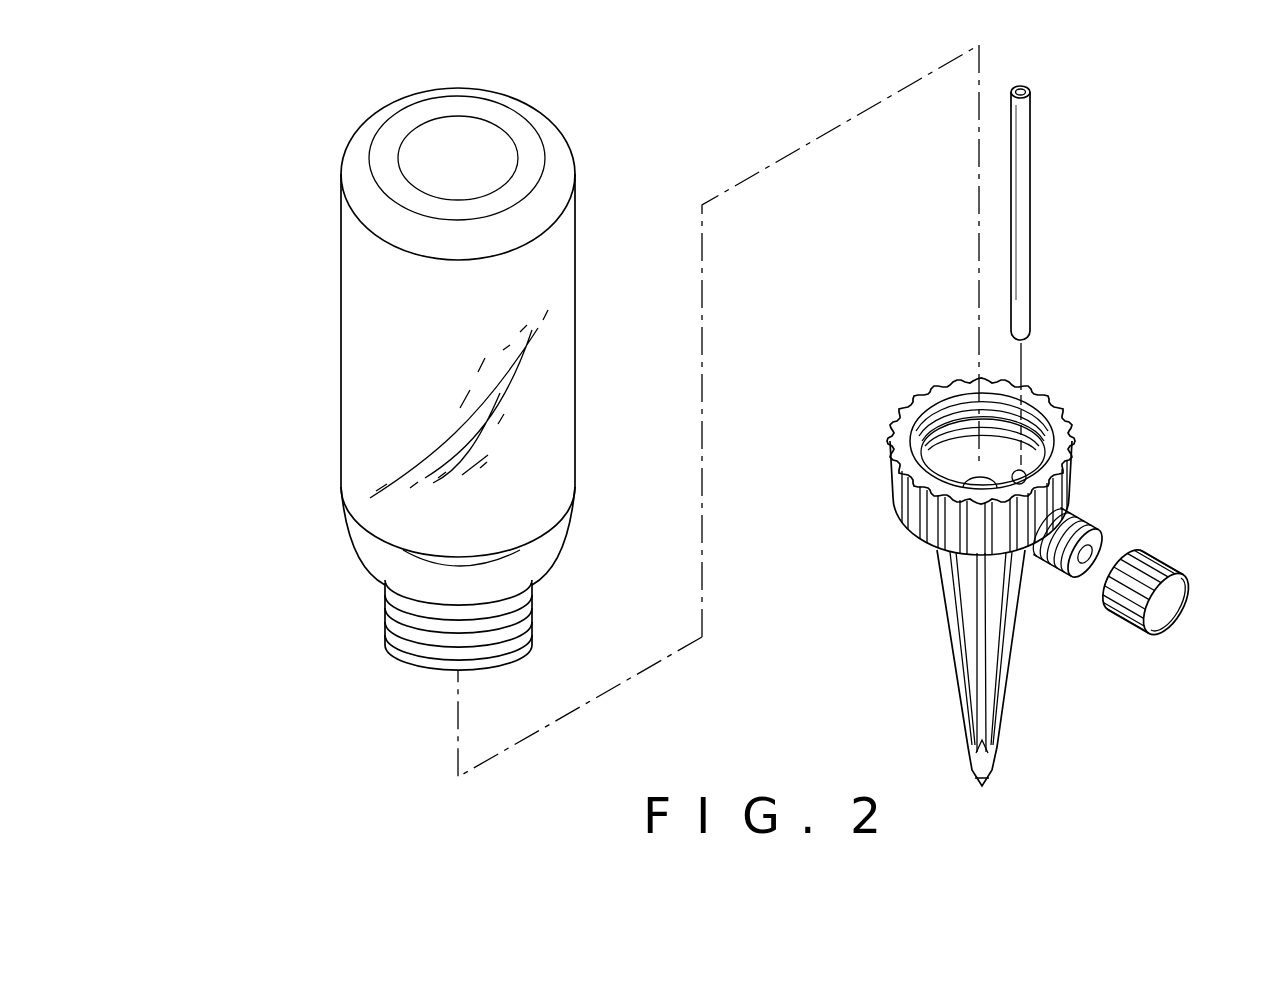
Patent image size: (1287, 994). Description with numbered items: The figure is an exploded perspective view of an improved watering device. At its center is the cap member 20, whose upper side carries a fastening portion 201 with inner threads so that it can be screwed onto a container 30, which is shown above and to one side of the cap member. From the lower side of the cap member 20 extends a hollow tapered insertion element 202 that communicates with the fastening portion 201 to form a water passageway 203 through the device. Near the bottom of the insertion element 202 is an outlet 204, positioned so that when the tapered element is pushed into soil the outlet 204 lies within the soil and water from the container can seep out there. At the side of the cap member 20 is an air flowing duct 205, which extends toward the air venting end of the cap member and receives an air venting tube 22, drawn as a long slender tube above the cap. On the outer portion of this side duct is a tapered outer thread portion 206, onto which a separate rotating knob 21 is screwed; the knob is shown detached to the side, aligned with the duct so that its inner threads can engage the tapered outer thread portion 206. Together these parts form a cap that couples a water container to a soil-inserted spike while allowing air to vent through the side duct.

The container 30 is at (369, 337).
The air venting tube 22 is at (1022, 222).
The cap member 20 is at (985, 563).
The fastening portion 201 is at (918, 405).
The hollow tapered insertion element 202 is at (955, 650).
The water passageway 203 is at (973, 485).
The outlet 204 is at (992, 717).
The air flowing duct 205 is at (1102, 540).
The tapered outer thread portion 206 is at (1080, 558).
The rotating knob 21 is at (1168, 603).